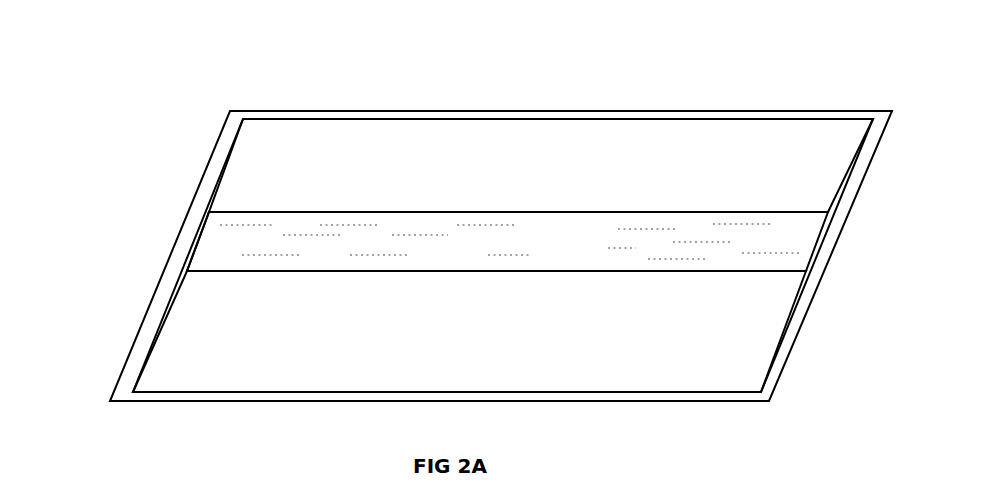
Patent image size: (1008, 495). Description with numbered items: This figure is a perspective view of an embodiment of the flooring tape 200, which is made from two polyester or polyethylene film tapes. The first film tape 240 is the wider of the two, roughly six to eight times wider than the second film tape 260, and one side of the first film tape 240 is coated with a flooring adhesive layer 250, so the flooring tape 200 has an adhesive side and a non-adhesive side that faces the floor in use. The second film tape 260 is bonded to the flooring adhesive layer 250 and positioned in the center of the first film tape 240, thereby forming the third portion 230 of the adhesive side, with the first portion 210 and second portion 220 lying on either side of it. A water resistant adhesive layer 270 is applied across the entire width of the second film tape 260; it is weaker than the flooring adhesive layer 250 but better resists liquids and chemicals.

The flooring tape 200 is at (217, 45).
The first portion 210 is at (612, 179).
The second portion 220 is at (564, 342).
The third portion 230 is at (584, 251).
The first film tape 240 is at (222, 121).
The flooring adhesive layer 250 is at (262, 166).
The second film tape 260 is at (186, 259).
The water resistant adhesive layer 270 is at (250, 229).